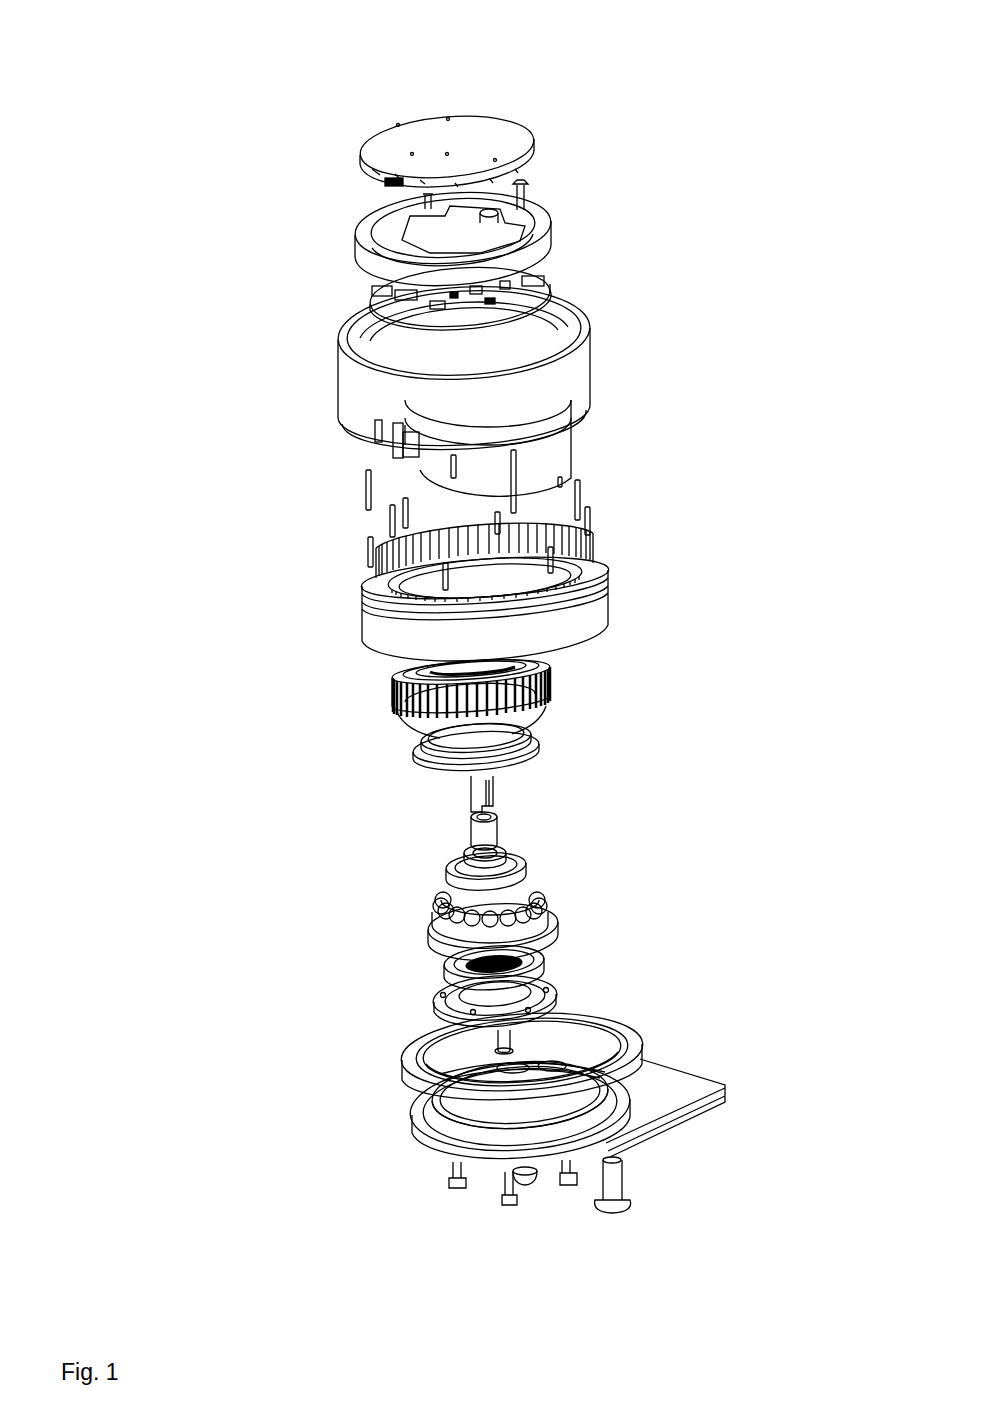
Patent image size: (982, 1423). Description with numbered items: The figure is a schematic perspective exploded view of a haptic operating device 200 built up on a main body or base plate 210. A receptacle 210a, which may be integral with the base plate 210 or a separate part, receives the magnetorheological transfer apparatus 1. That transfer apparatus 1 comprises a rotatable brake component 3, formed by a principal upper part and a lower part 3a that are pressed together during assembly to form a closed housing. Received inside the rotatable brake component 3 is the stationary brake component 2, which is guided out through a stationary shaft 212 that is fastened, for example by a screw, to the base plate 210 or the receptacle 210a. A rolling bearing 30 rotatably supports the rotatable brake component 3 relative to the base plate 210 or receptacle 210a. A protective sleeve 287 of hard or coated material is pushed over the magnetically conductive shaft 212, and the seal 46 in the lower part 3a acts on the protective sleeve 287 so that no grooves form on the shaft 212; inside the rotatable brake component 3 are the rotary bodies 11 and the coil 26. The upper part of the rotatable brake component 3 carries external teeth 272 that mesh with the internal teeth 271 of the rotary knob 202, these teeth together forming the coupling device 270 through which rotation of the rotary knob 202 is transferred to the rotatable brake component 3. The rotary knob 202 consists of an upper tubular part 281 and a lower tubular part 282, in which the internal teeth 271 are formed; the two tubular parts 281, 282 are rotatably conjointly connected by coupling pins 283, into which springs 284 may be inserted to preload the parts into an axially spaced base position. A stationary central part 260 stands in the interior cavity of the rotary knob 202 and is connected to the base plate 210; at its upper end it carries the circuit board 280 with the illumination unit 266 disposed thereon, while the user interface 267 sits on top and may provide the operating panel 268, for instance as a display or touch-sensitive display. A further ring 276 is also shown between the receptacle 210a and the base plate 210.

The haptic operating device 200 is at (178, 80).
The user interface 267 is at (449, 88).
The operating panel 268 is at (380, 150).
The illumination unit 266 is at (548, 226).
The circuit board 280 is at (537, 296).
The upper tubular part 281 is at (582, 358).
The rotary knob 202 is at (638, 555).
The stationary central part 260 is at (548, 441).
The springs 284 is at (578, 484).
The coupling pins 283 is at (590, 516).
The internal teeth 271 is at (447, 528).
The lower tubular part 282 is at (603, 601).
The coupling device 270 is at (366, 686).
The external teeth 272 is at (566, 670).
The rotatable brake component 3 is at (553, 690).
The magnetorheological transfer apparatus 1 is at (724, 698).
The stationary brake component 2 is at (537, 749).
The stationary shaft 212 is at (498, 797).
The protective sleeve 287 is at (474, 828).
The seal 46 is at (503, 848).
The coil 26 is at (507, 875).
The rotary bodies 11 is at (436, 905).
The lower part 3a is at (553, 929).
The rolling bearing 30 is at (533, 968).
The receptacle 210a is at (560, 995).
The ring 276 is at (622, 1031).
The base plate 210 is at (693, 1085).